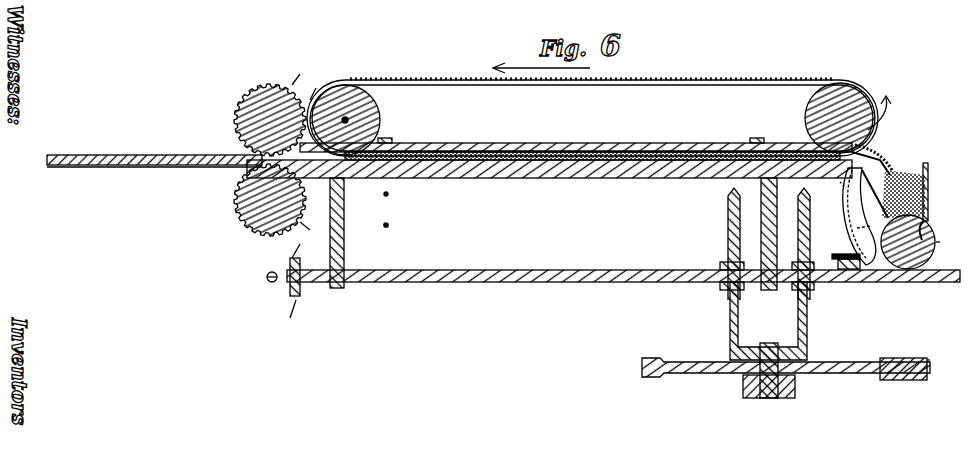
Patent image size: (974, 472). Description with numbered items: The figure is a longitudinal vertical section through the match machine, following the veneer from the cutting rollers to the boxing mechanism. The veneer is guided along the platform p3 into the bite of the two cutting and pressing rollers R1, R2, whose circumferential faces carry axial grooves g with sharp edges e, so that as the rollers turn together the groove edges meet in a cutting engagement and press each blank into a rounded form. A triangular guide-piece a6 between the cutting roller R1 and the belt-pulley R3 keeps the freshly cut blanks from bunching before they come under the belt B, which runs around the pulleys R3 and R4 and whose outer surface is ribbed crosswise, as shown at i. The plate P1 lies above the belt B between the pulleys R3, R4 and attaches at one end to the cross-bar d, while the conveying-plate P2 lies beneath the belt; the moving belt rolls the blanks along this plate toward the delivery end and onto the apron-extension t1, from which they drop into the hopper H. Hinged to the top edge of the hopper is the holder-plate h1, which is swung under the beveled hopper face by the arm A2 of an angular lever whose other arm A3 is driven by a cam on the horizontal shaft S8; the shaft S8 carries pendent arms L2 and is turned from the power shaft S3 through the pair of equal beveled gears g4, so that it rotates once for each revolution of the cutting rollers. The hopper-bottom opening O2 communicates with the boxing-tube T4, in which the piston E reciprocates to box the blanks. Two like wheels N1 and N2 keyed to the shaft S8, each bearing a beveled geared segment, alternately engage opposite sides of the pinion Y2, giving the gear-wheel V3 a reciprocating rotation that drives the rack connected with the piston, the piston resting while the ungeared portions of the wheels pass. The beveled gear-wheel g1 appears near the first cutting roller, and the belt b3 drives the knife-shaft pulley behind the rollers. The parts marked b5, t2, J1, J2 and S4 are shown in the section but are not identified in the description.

The plate P1 is at (600, 143).
The conveying-plate P2 is at (603, 178).
The crosswise ribs i is at (421, 80).
The belt B is at (494, 86).
The cross-bar d is at (757, 138).
The cutting and pressing roller R1 is at (236, 120).
The cutting and pressing roller R2 is at (234, 200).
The belt-pulley R3 is at (359, 120).
The belt roller R4 is at (808, 108).
The triangular-form guide-piece a6 is at (339, 127).
The platform p3 is at (50, 155).
The sharp groove edges e is at (304, 145).
The beveled gear-wheel g1 is at (313, 86).
The grooves g is at (297, 247).
The engaging beveled gear-wheels g4 is at (298, 293).
The belt b3 is at (399, 194).
The pivot pin b5 is at (400, 225).
The pendent arms L2 is at (553, 234).
The segmentally geared wheel N1 is at (721, 244).
The segmentally geared wheel N2 is at (812, 244).
The horizontal shaft S8 is at (623, 265).
The shaft S3 is at (266, 278).
The apron-extension t1 is at (888, 168).
The deflector tip t2 is at (883, 120).
The holder-plate h1 is at (865, 216).
The lever arm A2 is at (835, 190).
The lever arm A3 is at (844, 262).
The hopper H is at (936, 191).
The piston E is at (917, 242).
The hopper-bottom opening O2 is at (928, 216).
The boxing-tube T4 is at (948, 244).
The pinion Y2 is at (768, 321).
The gear-wheel V3 is at (786, 358).
The block J1 is at (903, 359).
The block end J2 is at (940, 355).
The pivot post S4 is at (770, 398).